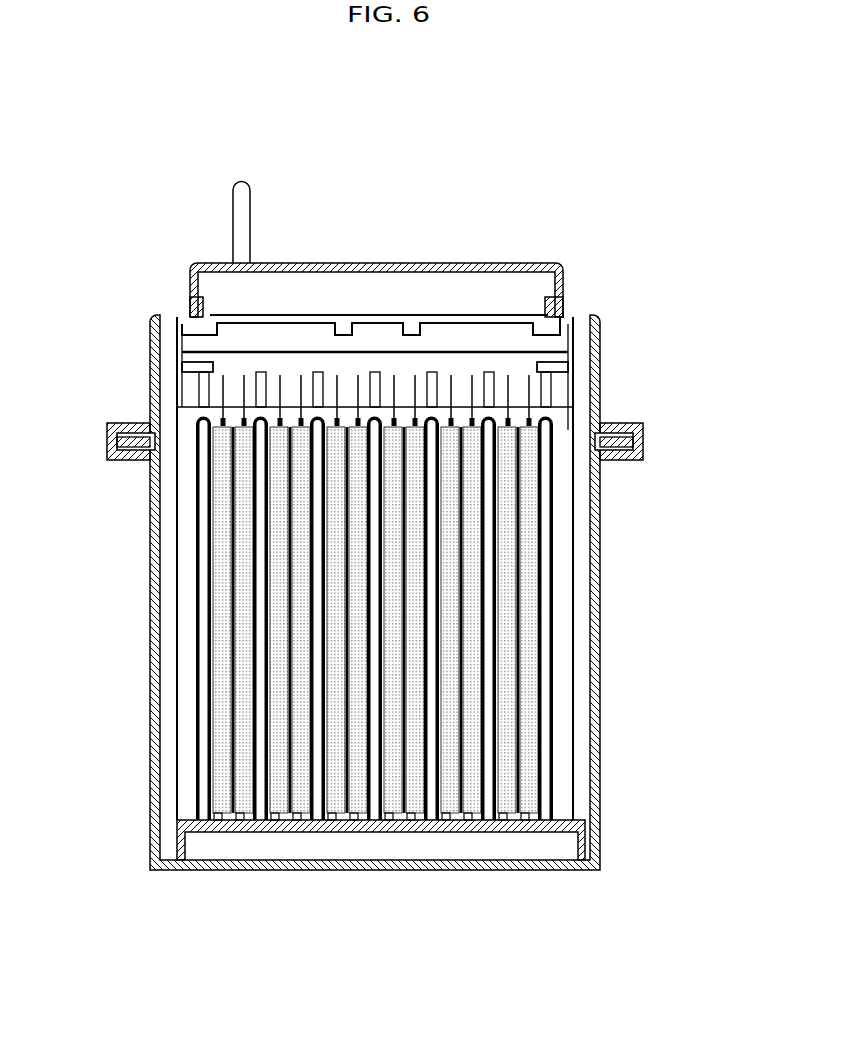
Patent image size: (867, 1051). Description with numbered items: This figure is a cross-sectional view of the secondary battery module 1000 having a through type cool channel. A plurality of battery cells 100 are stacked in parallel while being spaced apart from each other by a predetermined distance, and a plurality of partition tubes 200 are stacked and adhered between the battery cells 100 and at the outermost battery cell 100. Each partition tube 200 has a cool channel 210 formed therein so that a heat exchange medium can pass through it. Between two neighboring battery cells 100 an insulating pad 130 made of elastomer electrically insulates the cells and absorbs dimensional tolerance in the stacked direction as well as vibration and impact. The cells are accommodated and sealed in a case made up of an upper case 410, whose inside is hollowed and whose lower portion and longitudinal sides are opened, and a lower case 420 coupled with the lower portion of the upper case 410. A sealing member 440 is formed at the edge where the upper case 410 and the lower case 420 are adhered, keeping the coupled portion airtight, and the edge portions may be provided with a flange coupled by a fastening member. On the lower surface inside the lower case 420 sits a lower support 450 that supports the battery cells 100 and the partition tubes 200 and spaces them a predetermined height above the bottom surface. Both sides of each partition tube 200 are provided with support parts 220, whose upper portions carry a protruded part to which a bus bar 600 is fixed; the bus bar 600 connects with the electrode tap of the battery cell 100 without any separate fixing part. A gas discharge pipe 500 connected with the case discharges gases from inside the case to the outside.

The secondary battery module 1000 is at (590, 172).
The battery cell 100 is at (465, 597).
The insulating pad 130 is at (520, 620).
The partition tube 200 is at (308, 568).
The cool channel 210 is at (203, 635).
The support part 220 is at (186, 683).
The upper case 410 is at (399, 266).
The lower case 420 is at (597, 768).
The sealing member 440 is at (643, 437).
The lower support 450 is at (503, 833).
The gas discharge pipe 500 is at (237, 212).
The bus bar 600 is at (463, 351).